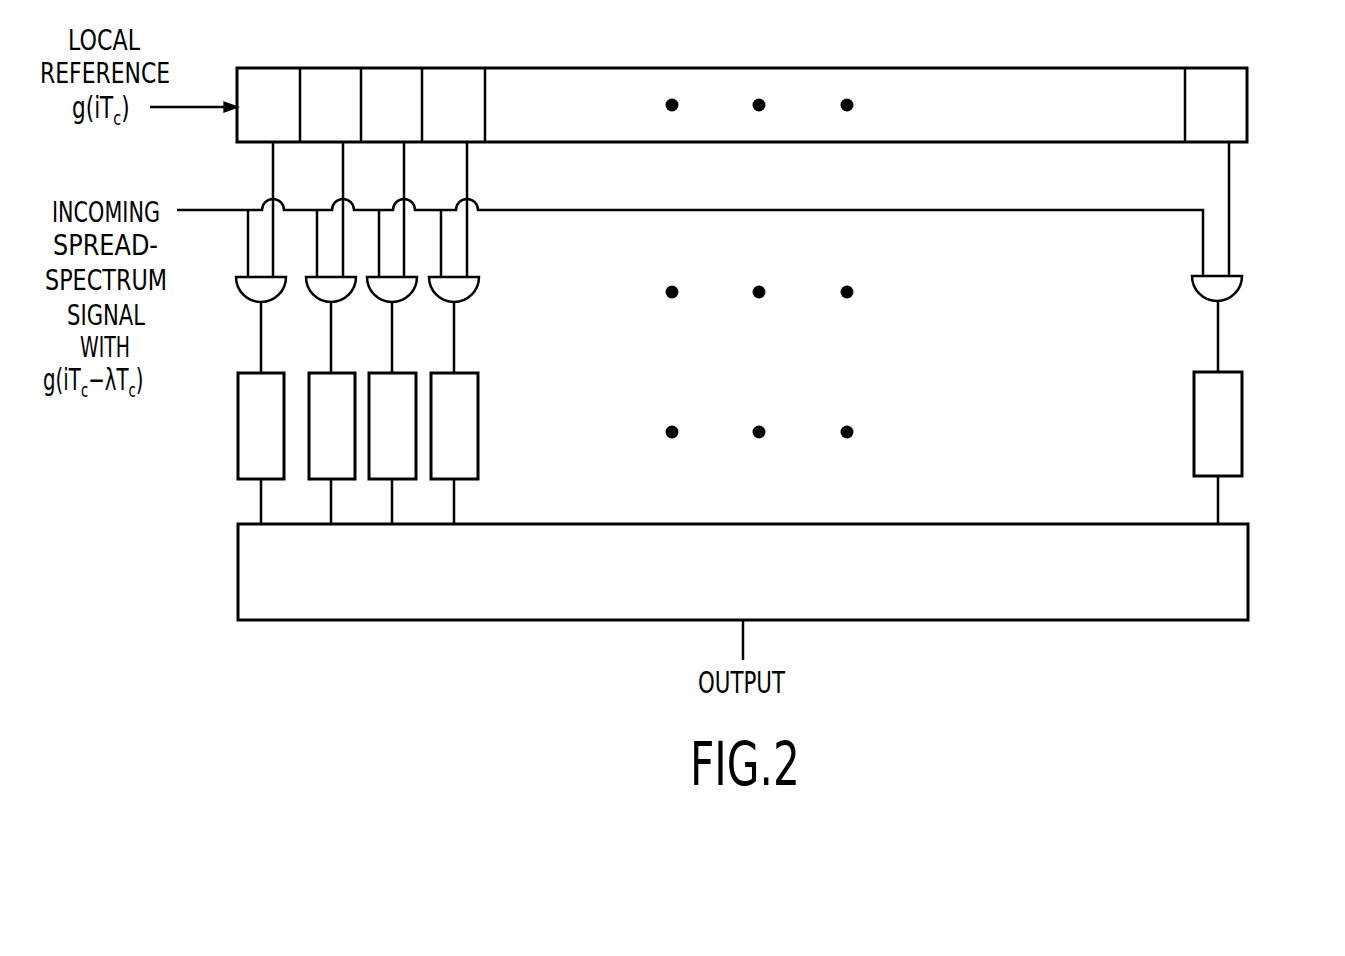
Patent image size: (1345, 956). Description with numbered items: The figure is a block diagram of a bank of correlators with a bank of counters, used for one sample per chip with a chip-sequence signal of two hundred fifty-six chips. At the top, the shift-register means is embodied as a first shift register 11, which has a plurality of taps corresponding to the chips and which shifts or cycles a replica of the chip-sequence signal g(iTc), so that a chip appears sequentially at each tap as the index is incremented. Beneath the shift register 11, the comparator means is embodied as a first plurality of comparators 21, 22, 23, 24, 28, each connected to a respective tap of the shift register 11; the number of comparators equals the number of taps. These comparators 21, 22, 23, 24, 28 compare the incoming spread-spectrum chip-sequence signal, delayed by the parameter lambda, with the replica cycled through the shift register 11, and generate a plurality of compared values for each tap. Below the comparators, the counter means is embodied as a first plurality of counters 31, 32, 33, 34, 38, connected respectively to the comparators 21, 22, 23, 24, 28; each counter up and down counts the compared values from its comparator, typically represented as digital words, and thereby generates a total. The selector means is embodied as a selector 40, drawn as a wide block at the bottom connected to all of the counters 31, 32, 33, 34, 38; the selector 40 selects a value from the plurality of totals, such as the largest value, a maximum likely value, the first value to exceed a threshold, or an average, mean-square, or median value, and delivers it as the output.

The first shift register 11 is at (1066, 67).
The comparator 21 is at (276, 296).
The comparator 22 is at (346, 296).
The comparator 23 is at (407, 296).
The comparator 24 is at (469, 296).
The comparator 28 is at (1232, 295).
The counter 31 is at (276, 480).
The counter 32 is at (347, 480).
The counter 33 is at (407, 480).
The counter 34 is at (468, 480).
The counter 38 is at (1232, 478).
The selector 40 is at (1250, 568).